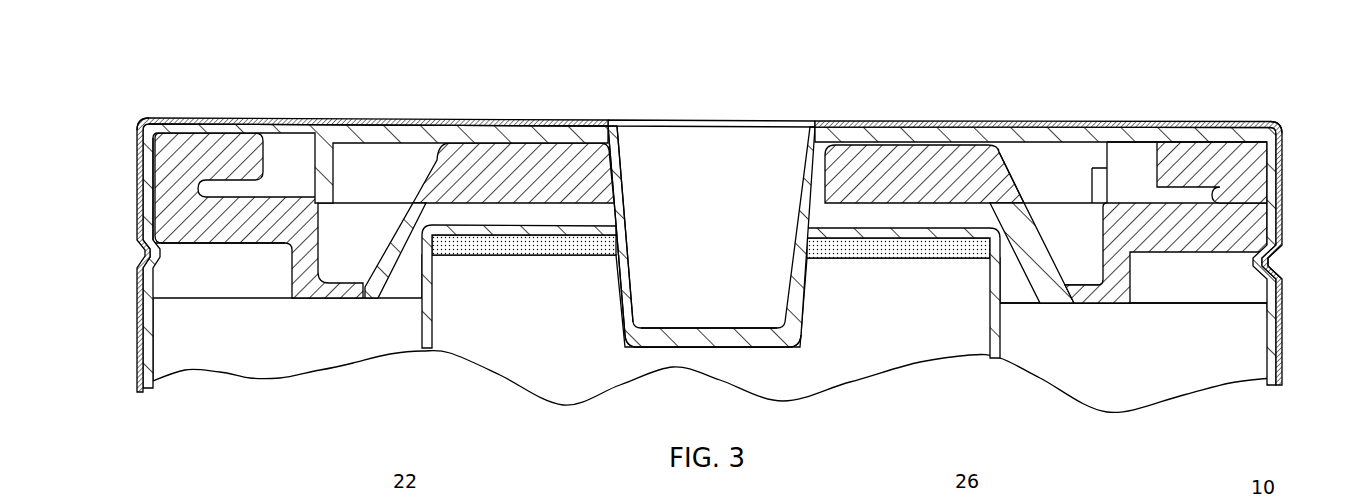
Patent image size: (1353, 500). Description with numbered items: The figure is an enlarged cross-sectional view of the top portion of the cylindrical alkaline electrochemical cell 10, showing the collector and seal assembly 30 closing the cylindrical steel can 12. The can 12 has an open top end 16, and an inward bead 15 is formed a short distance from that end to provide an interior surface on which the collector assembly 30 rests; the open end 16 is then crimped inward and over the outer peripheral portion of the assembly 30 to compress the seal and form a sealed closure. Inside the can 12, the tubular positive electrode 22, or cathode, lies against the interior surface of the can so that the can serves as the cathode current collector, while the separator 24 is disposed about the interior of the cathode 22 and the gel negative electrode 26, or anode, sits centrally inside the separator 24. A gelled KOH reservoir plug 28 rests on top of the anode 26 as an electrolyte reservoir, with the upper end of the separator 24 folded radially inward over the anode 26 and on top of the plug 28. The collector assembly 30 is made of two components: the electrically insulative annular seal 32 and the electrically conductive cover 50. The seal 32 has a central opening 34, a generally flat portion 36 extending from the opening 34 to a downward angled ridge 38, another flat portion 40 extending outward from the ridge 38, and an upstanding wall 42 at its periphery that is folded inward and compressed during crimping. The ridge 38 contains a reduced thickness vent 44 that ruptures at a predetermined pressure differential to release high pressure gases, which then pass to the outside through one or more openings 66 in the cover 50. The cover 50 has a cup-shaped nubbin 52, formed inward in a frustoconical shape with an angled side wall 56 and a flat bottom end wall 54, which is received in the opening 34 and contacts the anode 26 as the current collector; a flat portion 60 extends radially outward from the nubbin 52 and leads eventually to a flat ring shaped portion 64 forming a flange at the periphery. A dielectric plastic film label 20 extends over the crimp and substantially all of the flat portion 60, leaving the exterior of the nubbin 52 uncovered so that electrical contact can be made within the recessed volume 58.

The cylindrical alkaline electrochemical cell 10 is at (1196, 54).
The cylindrical steel can 12 is at (1270, 338).
The inward bead 15 is at (1273, 257).
The open top end 16 is at (283, 120).
The plastic film label 20 is at (138, 330).
The positive electrode 22 is at (357, 350).
The separator 24 is at (997, 322).
The negative electrode 26 is at (483, 347).
The gelled KOH reservoir plug 28 is at (918, 250).
The collector and seal assembly 30 is at (234, 264).
The annular seal 32 is at (198, 126).
The central opening 34 is at (840, 180).
The generally flat portion 36 is at (905, 160).
The downward angled ridge 38 is at (1062, 284).
The generally flat portion 40 is at (1270, 233).
The upstanding wall 42 is at (1215, 140).
The reduced thickness vent 44 is at (1062, 284).
The electrically conductive cover 50 is at (355, 117).
The cup-shaped nubbin 52 is at (634, 146).
The flat bottom end wall 54 is at (745, 342).
The angled side wall 56 is at (620, 226).
The recessed volume 58 is at (724, 272).
The flat portion 60 is at (520, 125).
The flat ring shaped portion 64 is at (1258, 163).
The openings 66 is at (1090, 158).